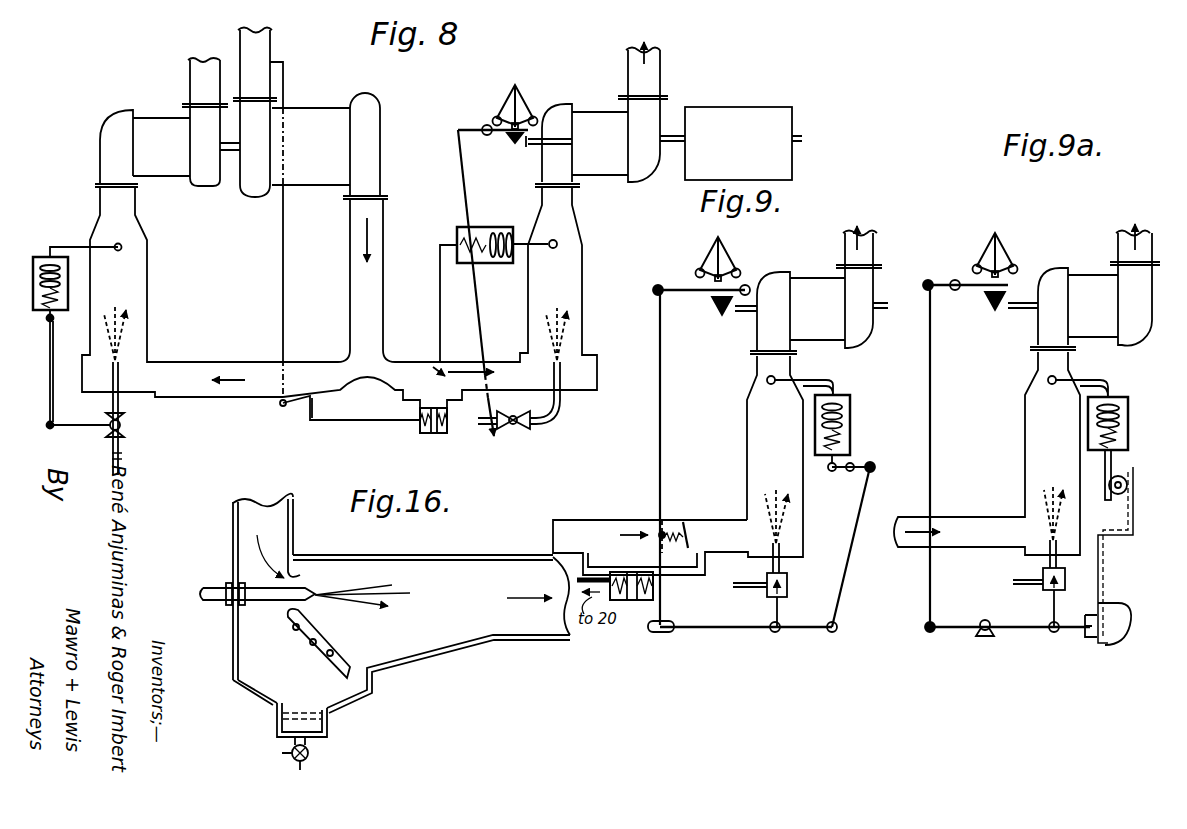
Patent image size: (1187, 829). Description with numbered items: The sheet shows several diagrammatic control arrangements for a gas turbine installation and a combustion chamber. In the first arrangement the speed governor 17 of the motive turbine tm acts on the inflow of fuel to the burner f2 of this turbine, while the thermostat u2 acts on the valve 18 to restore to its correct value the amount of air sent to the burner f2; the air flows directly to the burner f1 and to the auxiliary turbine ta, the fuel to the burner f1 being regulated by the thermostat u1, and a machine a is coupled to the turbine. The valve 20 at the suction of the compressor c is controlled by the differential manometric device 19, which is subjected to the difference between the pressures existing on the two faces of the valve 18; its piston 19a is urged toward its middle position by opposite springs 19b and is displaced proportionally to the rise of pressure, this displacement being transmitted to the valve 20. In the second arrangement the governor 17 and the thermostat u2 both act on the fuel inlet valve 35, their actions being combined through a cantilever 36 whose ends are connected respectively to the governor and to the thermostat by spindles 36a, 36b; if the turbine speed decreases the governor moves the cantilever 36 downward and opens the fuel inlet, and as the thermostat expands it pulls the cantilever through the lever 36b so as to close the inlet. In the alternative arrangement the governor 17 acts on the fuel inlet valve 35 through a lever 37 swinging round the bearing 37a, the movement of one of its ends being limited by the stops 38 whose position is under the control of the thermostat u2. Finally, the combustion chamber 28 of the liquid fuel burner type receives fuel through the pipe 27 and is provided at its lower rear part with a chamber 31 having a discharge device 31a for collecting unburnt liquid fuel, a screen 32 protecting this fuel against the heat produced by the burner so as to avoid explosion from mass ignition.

In FIG. 8, the auxiliary turbine ta is at (170, 130).
In FIG. 8, the valve 20 is at (260, 68).
In FIG. 8, the compressor c is at (308, 122).
In FIG. 8, the speed governor 17 is at (503, 97).
In FIG. 9, the speed governor 17 is at (705, 256).
In FIG. 9A, the speed governor 17 is at (1001, 240).
In FIG. 8, the motive turbine tm is at (602, 130).
In FIG. 9, the motive turbine tm is at (815, 288).
In FIG. 9A, the motive turbine tm is at (1092, 290).
In FIG. 8, the machine / generator a is at (722, 127).
In FIG. 8, the thermostat u1 is at (124, 246).
In FIG. 8, the thermostat u2 is at (560, 244).
In FIG. 9, the thermostat u2 is at (845, 393).
In FIG. 9A, the thermostat u2 is at (1130, 395).
In FIG. 8, the burner f1 is at (125, 352).
In FIG. 8, the burner f2 is at (566, 356).
In FIG. 9, the burner f2 is at (783, 548).
In FIG. 9A, the burner f2 is at (1060, 550).
In FIG. 8, the valve 18 is at (432, 378).
In FIG. 9, the valve 18 is at (686, 529).
In FIG. 8, the differential manometric device 19 is at (426, 434).
In FIG. 9, the differential manometric device 19 is at (646, 602).
In FIG. 8, the piston 19a is at (440, 434).
In FIG. 9, the piston 19a is at (628, 602).
In FIG. 8, the opposite springs 19b is at (420, 418).
In FIG. 9, the spindle 36a is at (657, 450).
In FIG. 9, the cantilever 36 is at (745, 632).
In FIG. 9, the spindle 36b is at (847, 586).
In FIG. 9, the fuel inlet valve 35 is at (789, 583).
In FIG. 9A, the fuel inlet valve 35 is at (1066, 582).
In FIG. 9A, the lever 37 is at (1027, 632).
In FIG. 9A, the bearing 37a is at (983, 632).
In FIG. 9A, the stops 38 is at (1122, 604).
In FIG. 16, the combustion chamber 28 is at (308, 565).
In FIG. 16, the fuel pipe 27 is at (221, 599).
In FIG. 16, the screen 32 is at (328, 645).
In FIG. 16, the chamber 31 is at (328, 715).
In FIG. 16, the discharge device 31a is at (320, 755).